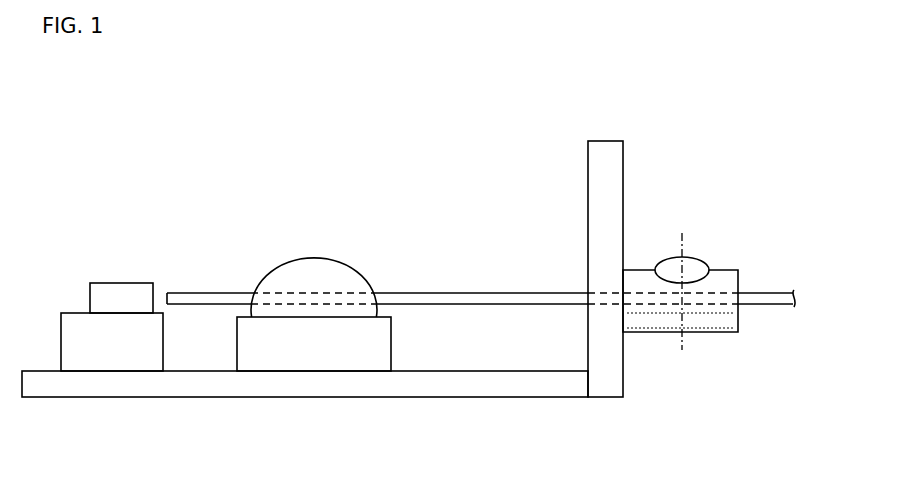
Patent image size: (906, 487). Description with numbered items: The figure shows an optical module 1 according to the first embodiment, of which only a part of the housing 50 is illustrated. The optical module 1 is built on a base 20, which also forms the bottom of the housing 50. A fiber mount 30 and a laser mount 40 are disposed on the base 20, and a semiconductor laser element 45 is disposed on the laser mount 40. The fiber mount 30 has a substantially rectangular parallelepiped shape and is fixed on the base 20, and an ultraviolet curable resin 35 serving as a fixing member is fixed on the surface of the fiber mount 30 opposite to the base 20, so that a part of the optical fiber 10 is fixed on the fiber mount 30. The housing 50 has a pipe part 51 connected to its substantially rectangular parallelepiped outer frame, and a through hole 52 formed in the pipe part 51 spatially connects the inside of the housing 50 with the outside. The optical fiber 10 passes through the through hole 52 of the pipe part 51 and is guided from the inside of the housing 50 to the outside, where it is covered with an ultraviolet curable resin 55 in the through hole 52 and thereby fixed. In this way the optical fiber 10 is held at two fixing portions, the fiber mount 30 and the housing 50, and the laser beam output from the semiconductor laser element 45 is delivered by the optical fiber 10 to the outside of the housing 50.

The optical module 1 is at (623, 112).
The optical fiber 10 is at (400, 302).
The base 20 is at (228, 385).
The fiber mount 30 is at (337, 358).
The ultraviolet curable resin 35 is at (326, 273).
The laser mount 40 is at (92, 330).
The semiconductor laser element 45 is at (112, 298).
The housing 50 is at (630, 251).
The pipe part 51 is at (723, 275).
The through hole 52 is at (743, 310).
The ultraviolet curable resin 55 is at (697, 267).